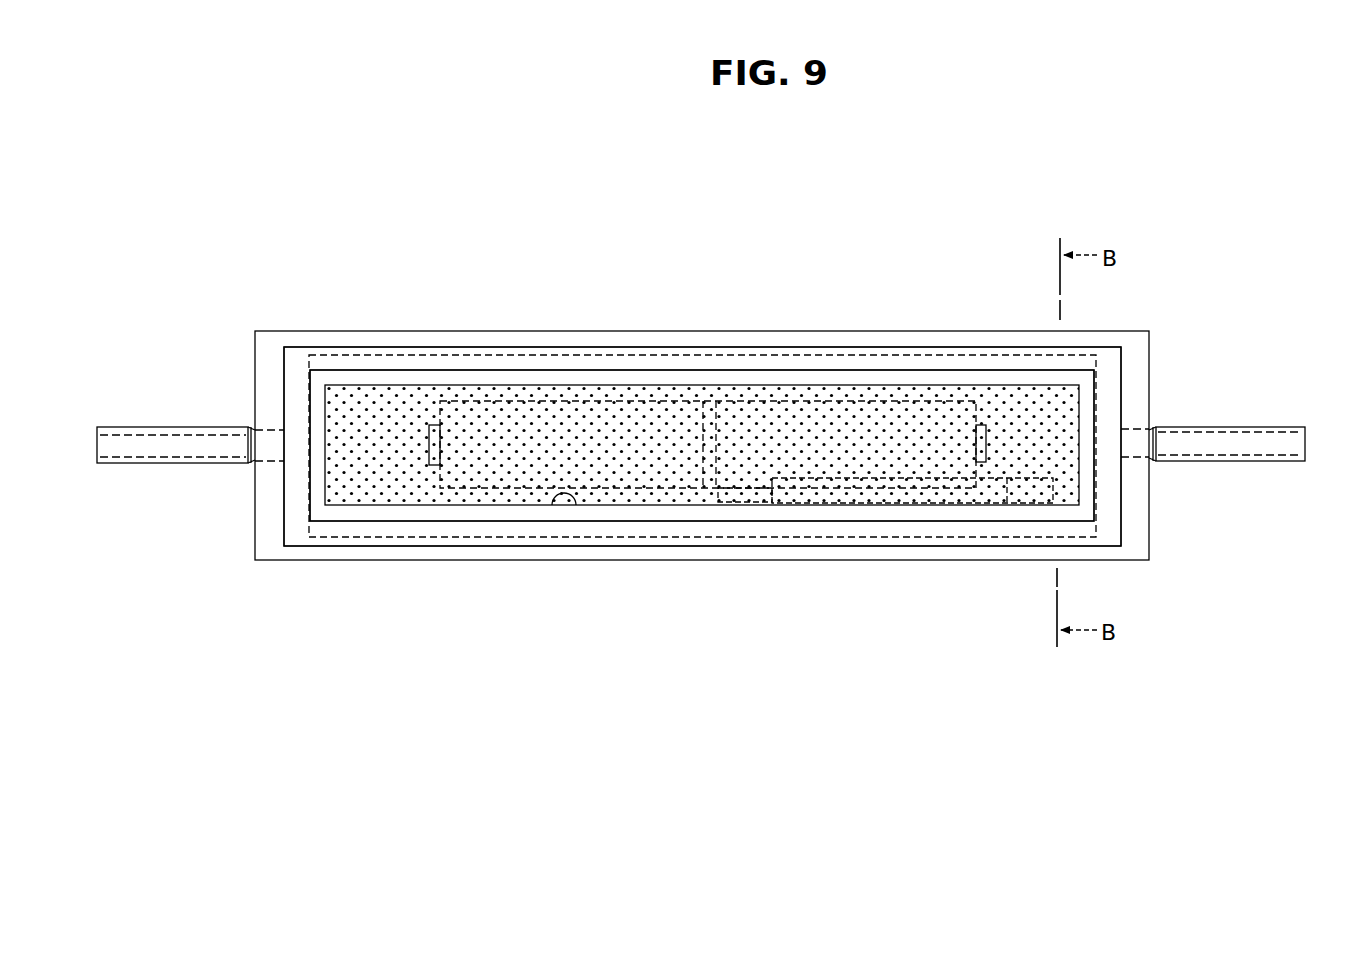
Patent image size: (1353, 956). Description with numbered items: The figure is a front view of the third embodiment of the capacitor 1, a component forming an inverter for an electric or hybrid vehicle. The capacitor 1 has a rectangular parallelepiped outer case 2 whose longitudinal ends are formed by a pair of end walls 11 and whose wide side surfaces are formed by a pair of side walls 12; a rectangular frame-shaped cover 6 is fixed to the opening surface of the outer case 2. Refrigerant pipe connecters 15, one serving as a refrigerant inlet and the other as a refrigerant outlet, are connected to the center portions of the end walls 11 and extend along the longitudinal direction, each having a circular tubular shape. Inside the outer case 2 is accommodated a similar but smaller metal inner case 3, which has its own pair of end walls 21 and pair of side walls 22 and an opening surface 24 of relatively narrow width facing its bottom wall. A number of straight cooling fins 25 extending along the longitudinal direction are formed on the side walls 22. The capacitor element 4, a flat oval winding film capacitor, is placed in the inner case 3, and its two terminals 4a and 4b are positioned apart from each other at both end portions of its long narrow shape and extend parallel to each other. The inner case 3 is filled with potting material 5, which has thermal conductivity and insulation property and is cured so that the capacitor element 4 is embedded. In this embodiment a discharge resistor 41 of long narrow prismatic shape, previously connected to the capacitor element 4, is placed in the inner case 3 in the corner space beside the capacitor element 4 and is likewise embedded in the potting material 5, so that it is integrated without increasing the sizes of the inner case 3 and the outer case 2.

The capacitor 1 is at (701, 415).
The outer case 2 is at (717, 433).
The inner case 3 is at (618, 365).
The capacitor element 4 is at (803, 493).
The terminal 4a is at (433, 448).
The terminal 4b is at (977, 450).
The potting material 5 is at (705, 502).
The cover 6 is at (297, 370).
The end wall 11 is at (268, 505).
The side wall 12 is at (484, 337).
The refrigerant pipe connecter 15 is at (176, 445).
The end wall 21 is at (315, 507).
The side wall 22 is at (797, 370).
The opening surface 24 is at (552, 505).
The cooling fin 25 is at (907, 353).
The discharge resistor 41 is at (1058, 492).